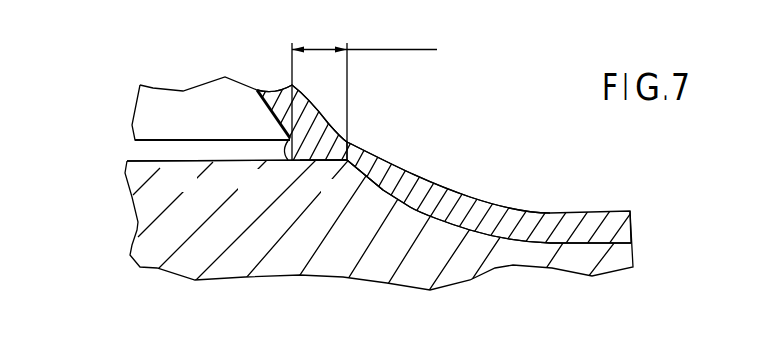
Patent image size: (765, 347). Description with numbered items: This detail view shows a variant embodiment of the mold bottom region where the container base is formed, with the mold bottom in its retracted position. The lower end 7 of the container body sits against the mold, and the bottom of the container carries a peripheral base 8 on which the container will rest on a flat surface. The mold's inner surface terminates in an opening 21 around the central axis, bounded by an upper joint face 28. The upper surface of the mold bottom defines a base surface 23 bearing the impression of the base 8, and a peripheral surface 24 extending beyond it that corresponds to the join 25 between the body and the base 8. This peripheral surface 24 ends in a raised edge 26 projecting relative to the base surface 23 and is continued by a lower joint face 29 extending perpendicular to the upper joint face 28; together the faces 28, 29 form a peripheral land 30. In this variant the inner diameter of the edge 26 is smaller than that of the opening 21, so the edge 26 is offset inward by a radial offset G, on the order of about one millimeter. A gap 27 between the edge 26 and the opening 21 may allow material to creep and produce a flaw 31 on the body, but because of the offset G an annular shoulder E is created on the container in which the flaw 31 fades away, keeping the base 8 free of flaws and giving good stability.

The lower end 7 is at (298, 115).
The peripheral base 8 is at (562, 218).
The opening 21 is at (286, 136).
The base surface 23 is at (593, 234).
The peripheral surface 24 is at (401, 188).
The join 25 is at (445, 190).
The raised edge 26 is at (358, 150).
The gap 27 is at (140, 150).
The upper joint face 28 is at (153, 140).
The lower joint face 29 is at (198, 158).
The peripheral land 30 is at (383, 227).
The flaw 31 is at (283, 159).
The annular shoulder E is at (312, 162).
The radial offset G is at (364, 91).